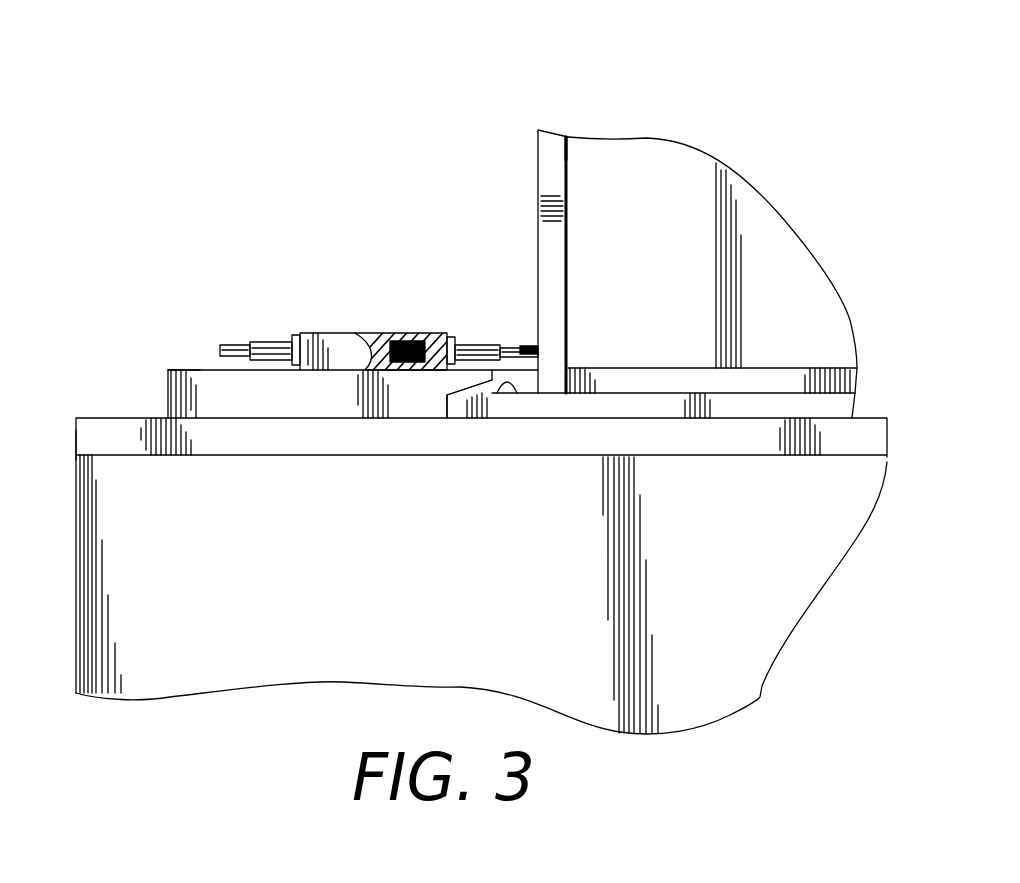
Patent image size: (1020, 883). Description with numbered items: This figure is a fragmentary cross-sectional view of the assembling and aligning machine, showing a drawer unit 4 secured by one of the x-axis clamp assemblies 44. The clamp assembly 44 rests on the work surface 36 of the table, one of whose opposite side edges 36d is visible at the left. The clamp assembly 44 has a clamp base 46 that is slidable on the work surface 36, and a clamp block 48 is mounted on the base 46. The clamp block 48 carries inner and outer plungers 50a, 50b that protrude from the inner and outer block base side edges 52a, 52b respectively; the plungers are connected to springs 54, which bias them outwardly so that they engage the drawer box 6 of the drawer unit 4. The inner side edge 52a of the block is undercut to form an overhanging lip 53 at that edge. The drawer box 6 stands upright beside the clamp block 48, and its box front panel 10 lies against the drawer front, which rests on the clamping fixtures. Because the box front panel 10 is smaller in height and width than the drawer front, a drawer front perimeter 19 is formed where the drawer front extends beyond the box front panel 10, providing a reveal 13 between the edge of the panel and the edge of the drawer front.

The drawer unit 4 is at (537, 130).
The drawer box 6 is at (562, 135).
The box front panel 10 is at (665, 368).
The reveal 13 is at (507, 380).
The drawer front perimeter 19 is at (455, 400).
The work surface 36 is at (118, 413).
The work surface side edge 36d is at (76, 432).
The x-axis clamp assembly 44 is at (165, 366).
The clamp base 46 is at (247, 400).
The clamp block 48 is at (303, 332).
The inner plunger 50a is at (456, 344).
The outer plunger 50b is at (208, 344).
The inner block base side edge 52a is at (450, 337).
The outer block base side edge 52b is at (265, 343).
The overhanging lip 53 is at (497, 372).
The spring 54 is at (390, 333).